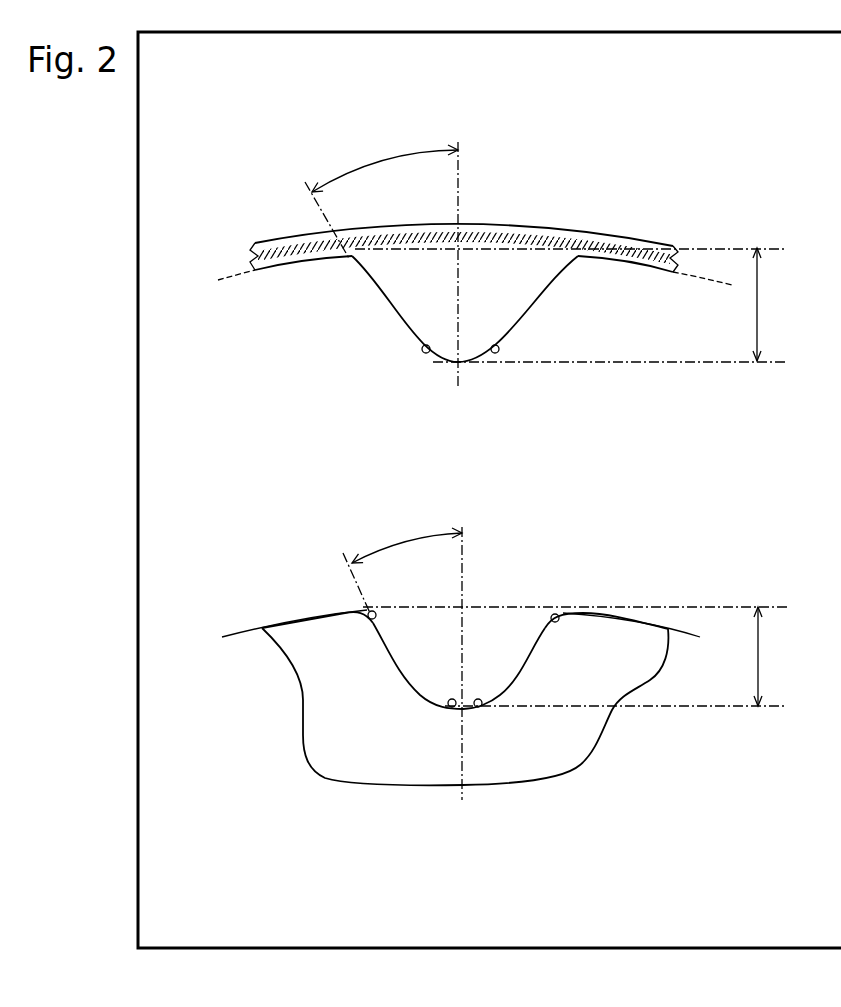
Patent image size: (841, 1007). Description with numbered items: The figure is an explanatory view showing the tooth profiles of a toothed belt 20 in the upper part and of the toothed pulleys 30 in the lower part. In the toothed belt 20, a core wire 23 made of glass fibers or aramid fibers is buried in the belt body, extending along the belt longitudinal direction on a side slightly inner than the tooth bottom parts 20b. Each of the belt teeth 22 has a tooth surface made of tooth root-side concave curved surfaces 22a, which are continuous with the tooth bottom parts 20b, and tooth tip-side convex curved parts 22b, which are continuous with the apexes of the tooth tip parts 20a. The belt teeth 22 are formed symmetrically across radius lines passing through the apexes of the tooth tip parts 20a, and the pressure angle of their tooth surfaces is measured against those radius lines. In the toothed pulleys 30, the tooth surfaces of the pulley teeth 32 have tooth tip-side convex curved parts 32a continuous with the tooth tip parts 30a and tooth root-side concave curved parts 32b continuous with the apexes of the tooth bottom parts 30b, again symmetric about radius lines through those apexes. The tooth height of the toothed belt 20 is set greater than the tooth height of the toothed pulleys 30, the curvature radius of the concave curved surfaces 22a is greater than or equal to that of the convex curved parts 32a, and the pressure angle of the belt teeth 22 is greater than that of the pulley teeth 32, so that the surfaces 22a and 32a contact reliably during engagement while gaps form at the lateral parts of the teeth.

The toothed belt 20 is at (252, 148).
The tooth tip parts 20a is at (475, 352).
The tooth bottom parts 20b is at (295, 270).
The belt teeth 22 is at (527, 290).
The tooth root-side concave curved surfaces 22a is at (340, 263).
The tooth tip-side convex curved parts 22b is at (424, 352).
The core wire 23 is at (582, 242).
The toothed pulleys 30 is at (248, 555).
The tooth tip parts 30a is at (317, 628).
The tooth bottom parts 30b is at (431, 684).
The pulley teeth 32 is at (288, 632).
The tooth tip-side convex curved parts 32a is at (369, 614).
The tooth root-side concave curved parts 32b is at (450, 706).